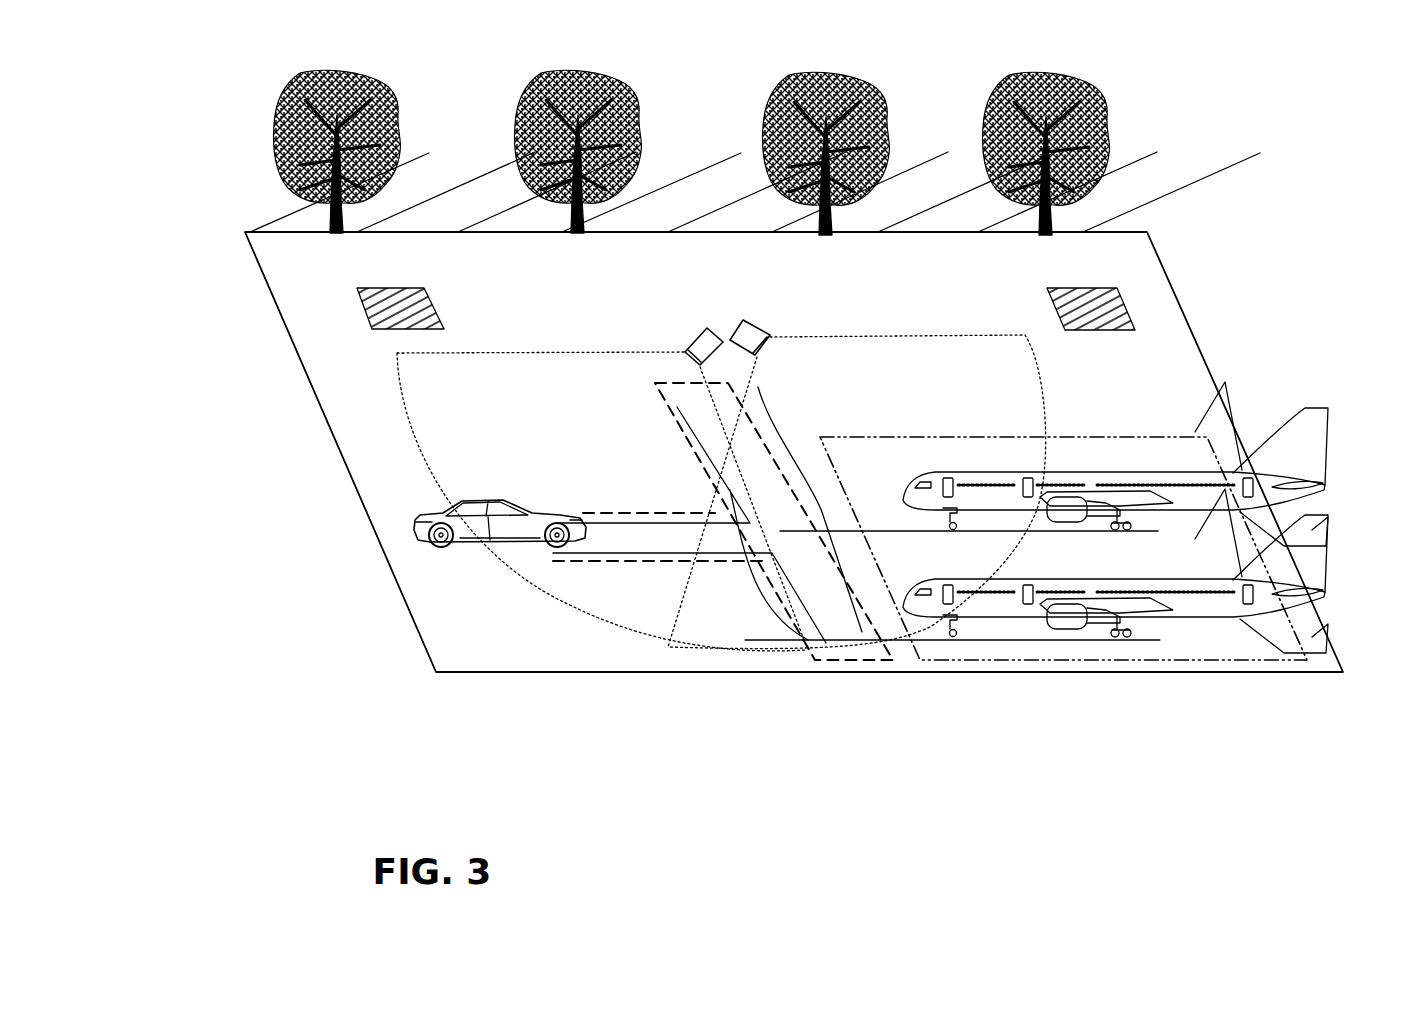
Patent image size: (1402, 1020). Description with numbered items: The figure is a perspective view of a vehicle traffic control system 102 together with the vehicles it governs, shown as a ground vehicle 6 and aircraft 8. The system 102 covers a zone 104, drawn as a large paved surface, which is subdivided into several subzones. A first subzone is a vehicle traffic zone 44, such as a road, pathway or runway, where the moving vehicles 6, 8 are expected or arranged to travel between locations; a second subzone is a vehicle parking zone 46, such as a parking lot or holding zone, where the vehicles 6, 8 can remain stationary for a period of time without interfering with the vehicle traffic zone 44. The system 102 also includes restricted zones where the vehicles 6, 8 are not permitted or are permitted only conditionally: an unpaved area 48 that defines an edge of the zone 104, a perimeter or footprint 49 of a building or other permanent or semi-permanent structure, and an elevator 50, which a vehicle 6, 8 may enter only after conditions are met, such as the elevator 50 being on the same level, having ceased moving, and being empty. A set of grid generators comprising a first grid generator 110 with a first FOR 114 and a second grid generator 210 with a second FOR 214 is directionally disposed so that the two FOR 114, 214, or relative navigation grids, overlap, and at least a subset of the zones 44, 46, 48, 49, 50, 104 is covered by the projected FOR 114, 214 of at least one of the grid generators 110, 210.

The vehicle 6 is at (413, 528).
The vehicle 8 is at (1312, 528).
The vehicle traffic zone 44 is at (643, 562).
The vehicle parking zone 46 is at (1203, 433).
The unpaved area 48 is at (448, 170).
The perimeter or footprint 49 is at (363, 308).
The elevator 50 is at (1123, 302).
The vehicle traffic control system 102 is at (708, 55).
The zone 104 is at (330, 433).
The first grid generator 110 is at (703, 338).
The first FOR 114 is at (602, 383).
The second grid generator 210 is at (757, 337).
The second FOR 214 is at (810, 383).